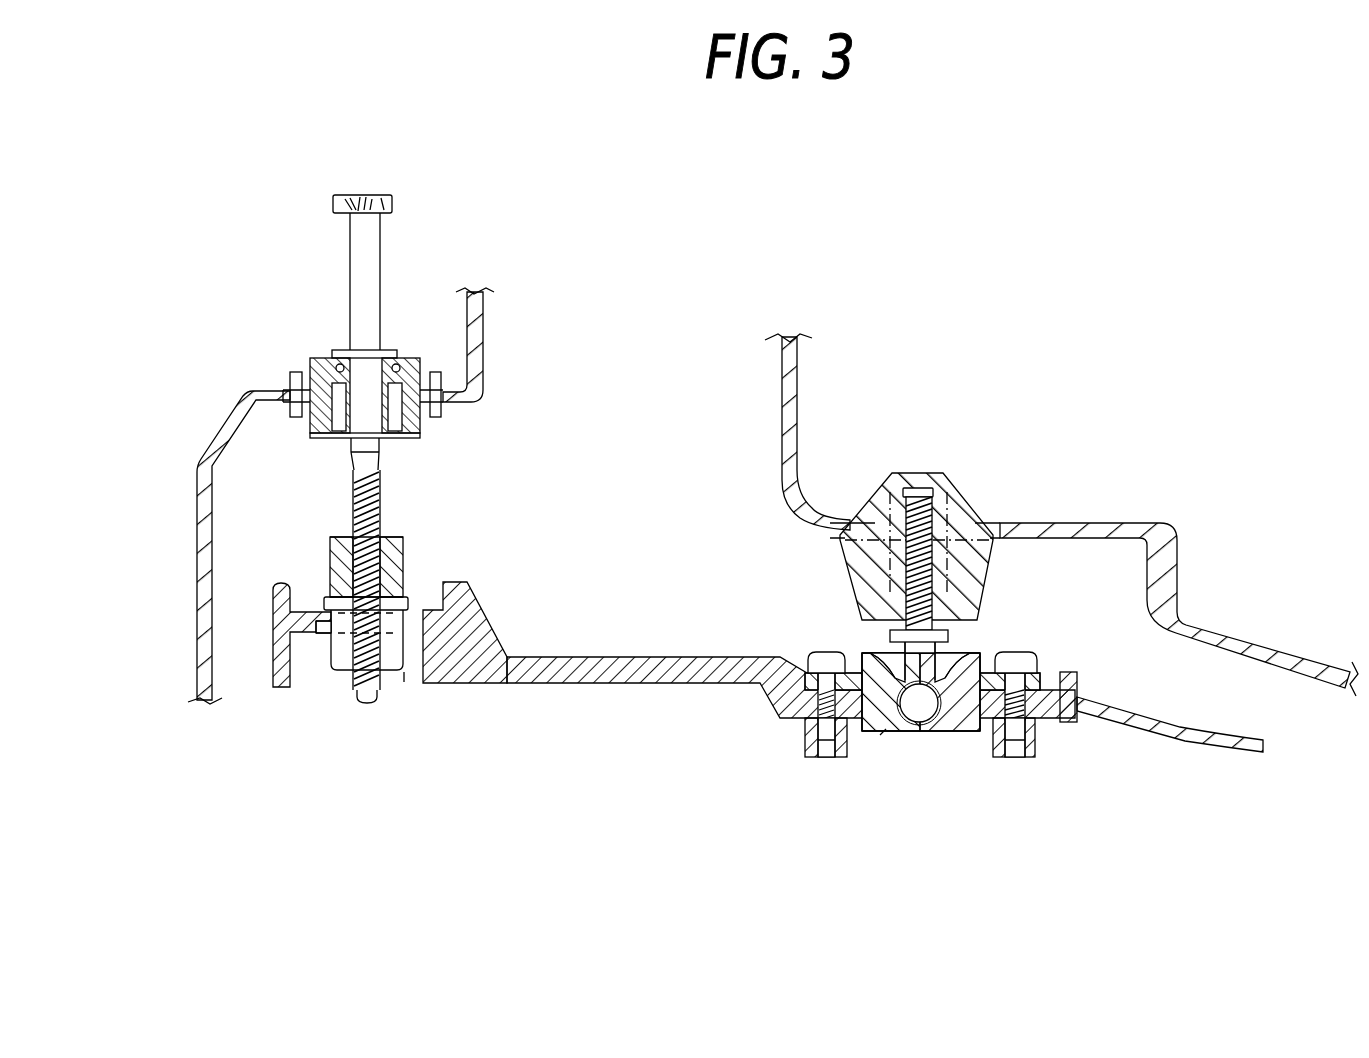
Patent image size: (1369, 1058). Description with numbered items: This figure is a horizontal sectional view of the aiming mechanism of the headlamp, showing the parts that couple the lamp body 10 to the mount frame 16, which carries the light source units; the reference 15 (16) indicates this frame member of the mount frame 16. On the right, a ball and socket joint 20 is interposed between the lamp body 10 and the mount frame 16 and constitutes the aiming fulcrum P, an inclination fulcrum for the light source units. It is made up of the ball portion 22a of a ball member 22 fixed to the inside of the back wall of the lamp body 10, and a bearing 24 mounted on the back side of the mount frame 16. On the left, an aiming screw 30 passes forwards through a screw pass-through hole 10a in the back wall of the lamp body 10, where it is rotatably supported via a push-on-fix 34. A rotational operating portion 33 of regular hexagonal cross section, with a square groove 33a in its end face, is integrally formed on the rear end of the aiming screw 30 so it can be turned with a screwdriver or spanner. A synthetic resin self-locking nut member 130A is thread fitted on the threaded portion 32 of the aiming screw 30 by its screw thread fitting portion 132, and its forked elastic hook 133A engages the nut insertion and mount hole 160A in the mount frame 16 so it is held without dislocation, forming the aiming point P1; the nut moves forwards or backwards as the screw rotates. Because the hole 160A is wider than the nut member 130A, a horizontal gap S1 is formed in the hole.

The lamp body 10 is at (1070, 523).
The screw pass-through hole 10a is at (362, 353).
The frame member 15 is at (792, 641).
The mount frame 16 is at (637, 657).
The ball and socket joint 20 is at (944, 686).
The ball member 22 is at (922, 735).
The ball portion 22a is at (919, 703).
The bearing 24 is at (960, 732).
The aiming screw 30 is at (289, 474).
The threaded portion 32 is at (382, 511).
The rotational operating portion 33 is at (333, 206).
The square groove 33a is at (363, 193).
The push-on-fix 34 is at (403, 438).
The nut member 130A is at (327, 557).
The screw thread fitting portion 132 is at (368, 708).
The elastic hook 133A is at (340, 672).
The nut insertion and mount hole 160A is at (467, 687).
The horizontal gap S1 is at (317, 628).
The aiming fulcrum P is at (883, 733).
The aiming point P1 is at (405, 675).